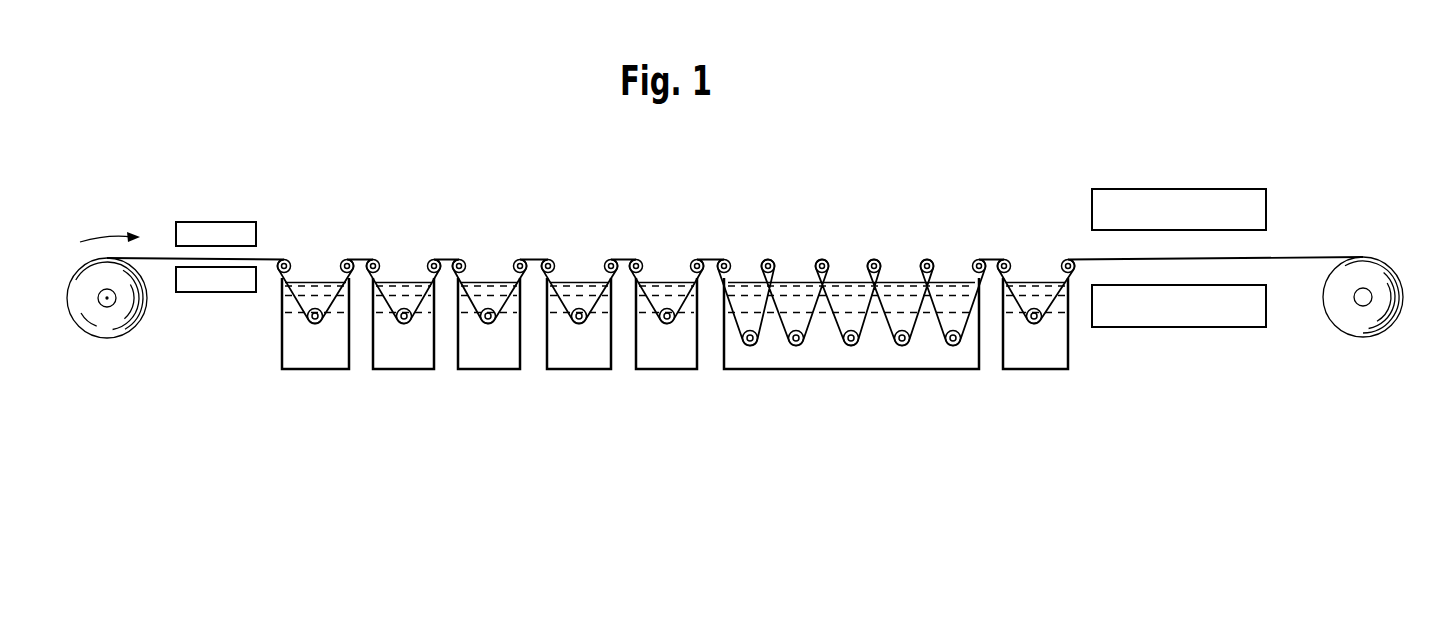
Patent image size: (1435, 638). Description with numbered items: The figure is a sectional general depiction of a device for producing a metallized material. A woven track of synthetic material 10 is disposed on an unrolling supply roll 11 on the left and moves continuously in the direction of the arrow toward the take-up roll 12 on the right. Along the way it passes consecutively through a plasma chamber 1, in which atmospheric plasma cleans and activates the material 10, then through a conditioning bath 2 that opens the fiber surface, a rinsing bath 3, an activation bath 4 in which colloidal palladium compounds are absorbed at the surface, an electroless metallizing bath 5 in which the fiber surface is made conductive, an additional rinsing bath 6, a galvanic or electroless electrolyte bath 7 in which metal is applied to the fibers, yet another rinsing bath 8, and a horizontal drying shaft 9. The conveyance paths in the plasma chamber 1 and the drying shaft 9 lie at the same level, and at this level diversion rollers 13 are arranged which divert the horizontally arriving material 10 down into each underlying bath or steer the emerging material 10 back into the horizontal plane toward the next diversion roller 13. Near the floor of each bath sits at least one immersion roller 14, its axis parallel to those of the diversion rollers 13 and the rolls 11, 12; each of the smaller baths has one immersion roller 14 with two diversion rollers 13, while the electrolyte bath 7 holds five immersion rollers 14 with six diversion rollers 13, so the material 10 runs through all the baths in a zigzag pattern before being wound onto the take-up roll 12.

The plasma chamber 1 is at (216, 298).
The conditioning bath 2 is at (320, 371).
The rinsing bath 3 is at (398, 371).
The activation bath 4 is at (483, 371).
The electroless metallizing bath 5 is at (578, 371).
The rinsing bath 6 is at (663, 371).
The electrolyte bath 7 is at (831, 371).
The rinsing bath 8 is at (1027, 370).
The drying shaft 9 is at (1196, 337).
The material 10 is at (163, 250).
The supply roll 11 is at (108, 320).
The take-up roll 12 is at (1358, 317).
The diversion rollers 13 is at (373, 261).
The immersion roller 14 is at (668, 309).